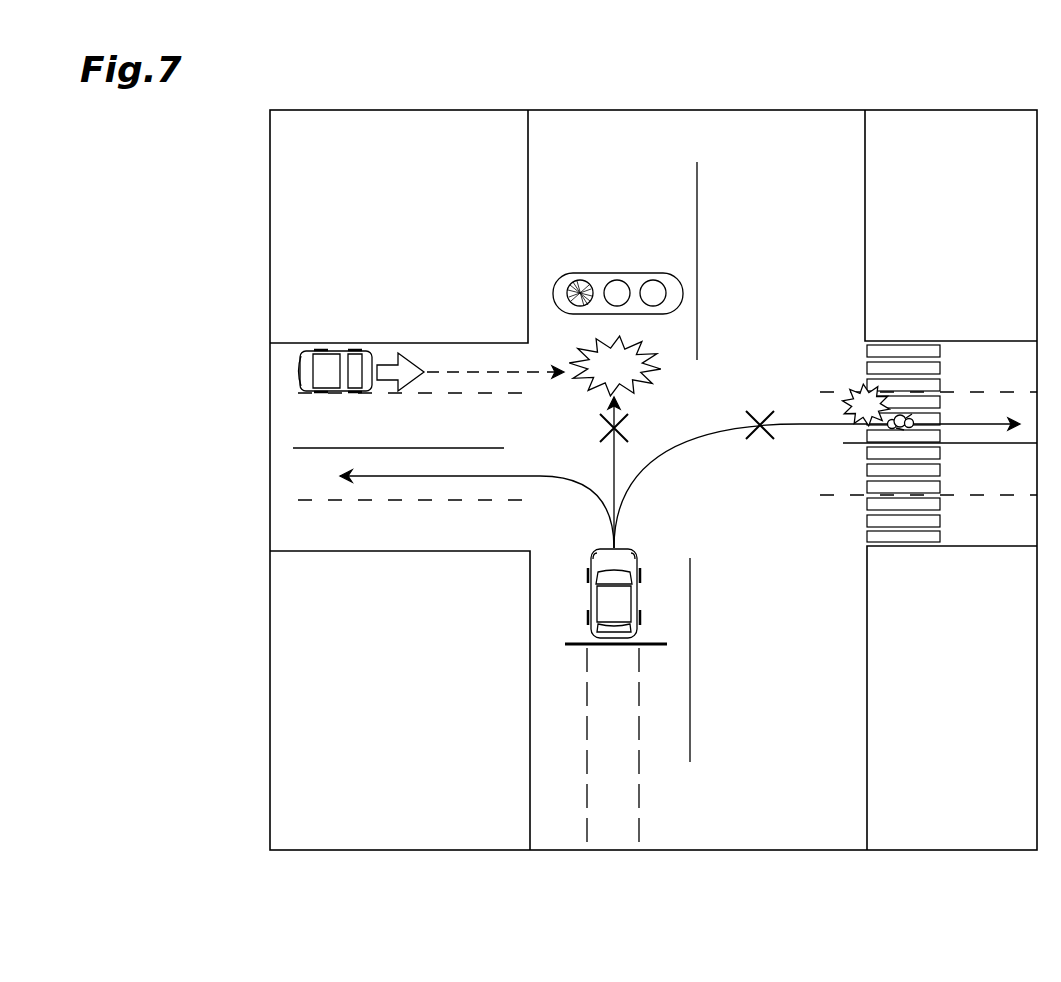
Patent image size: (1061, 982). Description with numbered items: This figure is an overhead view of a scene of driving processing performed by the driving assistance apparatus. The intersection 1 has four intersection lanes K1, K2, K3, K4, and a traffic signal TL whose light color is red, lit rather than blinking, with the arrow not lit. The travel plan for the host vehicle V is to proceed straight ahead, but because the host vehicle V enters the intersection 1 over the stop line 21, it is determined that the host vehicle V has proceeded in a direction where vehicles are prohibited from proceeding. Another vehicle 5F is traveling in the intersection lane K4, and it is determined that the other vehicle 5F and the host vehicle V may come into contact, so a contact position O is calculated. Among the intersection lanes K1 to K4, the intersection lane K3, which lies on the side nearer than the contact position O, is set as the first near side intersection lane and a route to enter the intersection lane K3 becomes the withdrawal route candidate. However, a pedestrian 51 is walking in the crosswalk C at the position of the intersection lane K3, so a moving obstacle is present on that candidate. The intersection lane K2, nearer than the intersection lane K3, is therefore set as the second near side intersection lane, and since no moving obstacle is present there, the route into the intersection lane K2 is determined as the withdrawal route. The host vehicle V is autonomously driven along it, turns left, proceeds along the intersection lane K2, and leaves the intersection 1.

The intersection 1 is at (504, 292).
The other vehicle 5F is at (328, 350).
The stop line 21 is at (576, 645).
The pedestrian 51 is at (904, 418).
The host vehicle V is at (590, 600).
The traffic signal TL is at (662, 271).
The contact position O is at (660, 370).
The crosswalk C is at (863, 370).
The intersection lane K1 is at (290, 533).
The intersection lane K2 is at (290, 479).
The intersection lane K3 is at (290, 426).
The intersection lane K4 is at (290, 373).